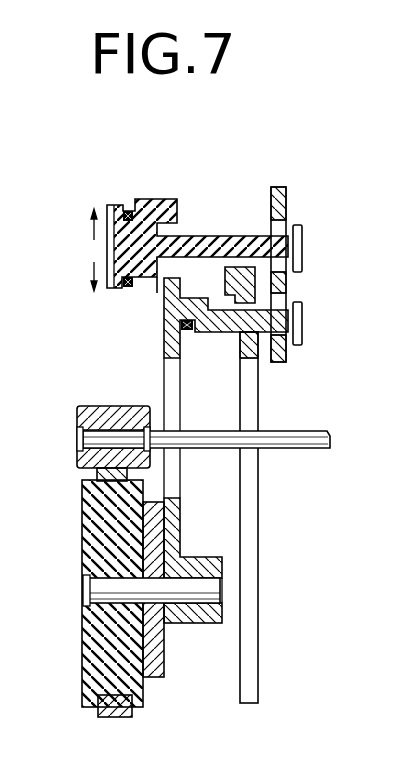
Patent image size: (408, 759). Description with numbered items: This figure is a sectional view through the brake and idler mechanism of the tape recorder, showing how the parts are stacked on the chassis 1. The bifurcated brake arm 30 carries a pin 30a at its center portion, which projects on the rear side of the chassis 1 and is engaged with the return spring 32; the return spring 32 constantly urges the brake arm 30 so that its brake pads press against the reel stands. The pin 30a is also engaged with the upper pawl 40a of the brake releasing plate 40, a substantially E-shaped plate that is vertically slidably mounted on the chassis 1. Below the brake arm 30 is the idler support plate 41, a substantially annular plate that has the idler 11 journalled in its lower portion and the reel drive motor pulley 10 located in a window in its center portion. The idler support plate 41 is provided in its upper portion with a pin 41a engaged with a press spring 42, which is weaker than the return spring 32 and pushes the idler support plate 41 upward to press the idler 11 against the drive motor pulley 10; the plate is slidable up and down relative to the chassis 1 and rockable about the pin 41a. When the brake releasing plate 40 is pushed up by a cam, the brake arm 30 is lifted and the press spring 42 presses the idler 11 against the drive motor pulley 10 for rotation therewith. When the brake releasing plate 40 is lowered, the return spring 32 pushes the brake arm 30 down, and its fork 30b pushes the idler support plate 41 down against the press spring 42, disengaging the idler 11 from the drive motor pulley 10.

The chassis 1 is at (286, 203).
The reel drive motor pulley 10 is at (89, 406).
The idler 11 is at (88, 659).
The brake arm 30 is at (125, 258).
The pin 30a is at (283, 241).
The fork 30b is at (146, 282).
The return spring 32 is at (127, 210).
The brake releasing plate 40 is at (250, 505).
The upper pawl 40a is at (267, 362).
The idler support plate 41 is at (182, 524).
The pin 41a is at (283, 317).
The press spring 42 is at (189, 332).